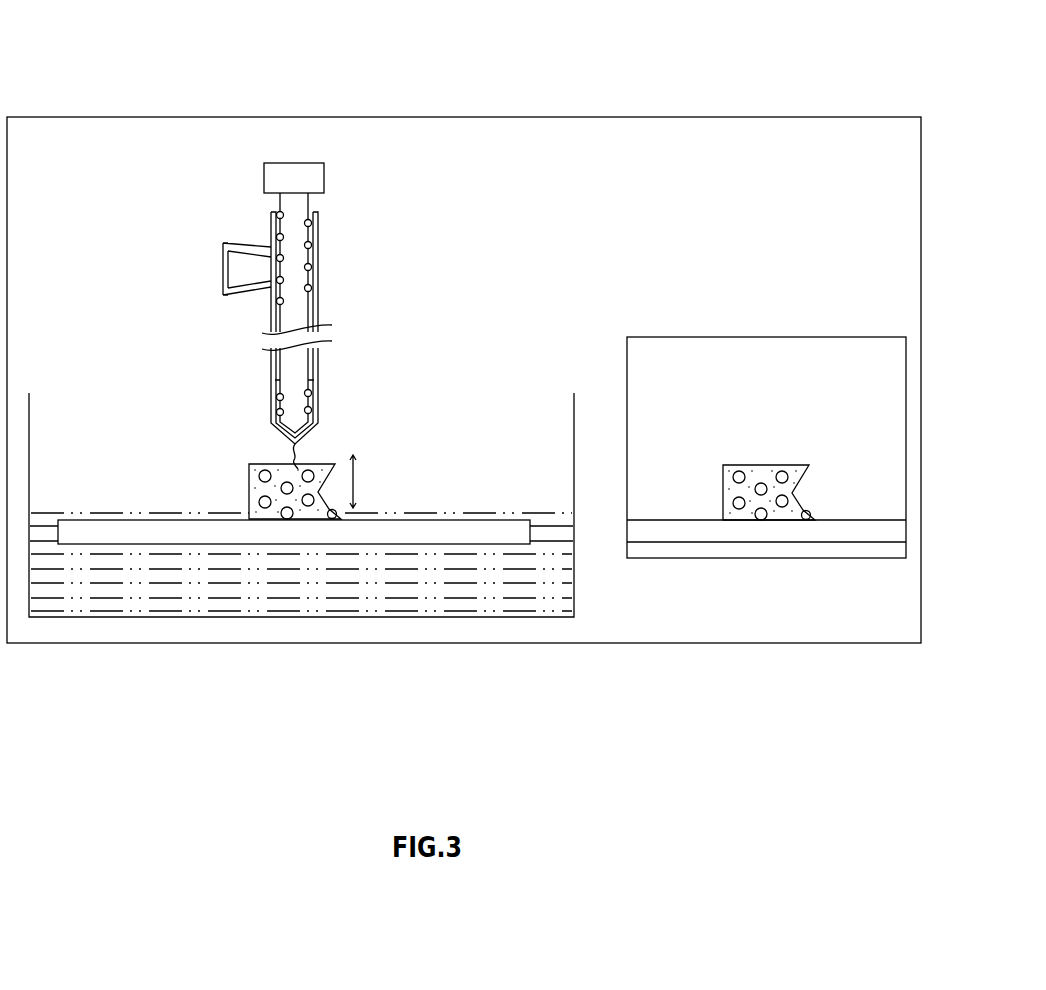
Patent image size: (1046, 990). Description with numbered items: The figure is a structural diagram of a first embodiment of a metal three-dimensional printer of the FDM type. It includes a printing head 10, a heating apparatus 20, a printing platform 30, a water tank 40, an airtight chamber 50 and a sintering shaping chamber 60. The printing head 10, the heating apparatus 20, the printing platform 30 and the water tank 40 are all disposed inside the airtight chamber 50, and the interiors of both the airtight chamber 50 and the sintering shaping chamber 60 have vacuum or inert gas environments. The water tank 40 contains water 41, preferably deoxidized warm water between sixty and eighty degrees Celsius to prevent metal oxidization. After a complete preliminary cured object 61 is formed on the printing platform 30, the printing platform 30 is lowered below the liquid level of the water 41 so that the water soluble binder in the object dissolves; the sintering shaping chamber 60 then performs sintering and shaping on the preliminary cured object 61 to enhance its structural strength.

The printing head 10 is at (315, 213).
The heating apparatus 20 is at (313, 265).
The printing platform 30 is at (426, 528).
The water tank 40 is at (301, 617).
The water 41 is at (467, 590).
The airtight chamber 50 is at (463, 117).
The sintering shaping chamber 60 is at (766, 337).
The preliminary cured object 61 is at (249, 493).